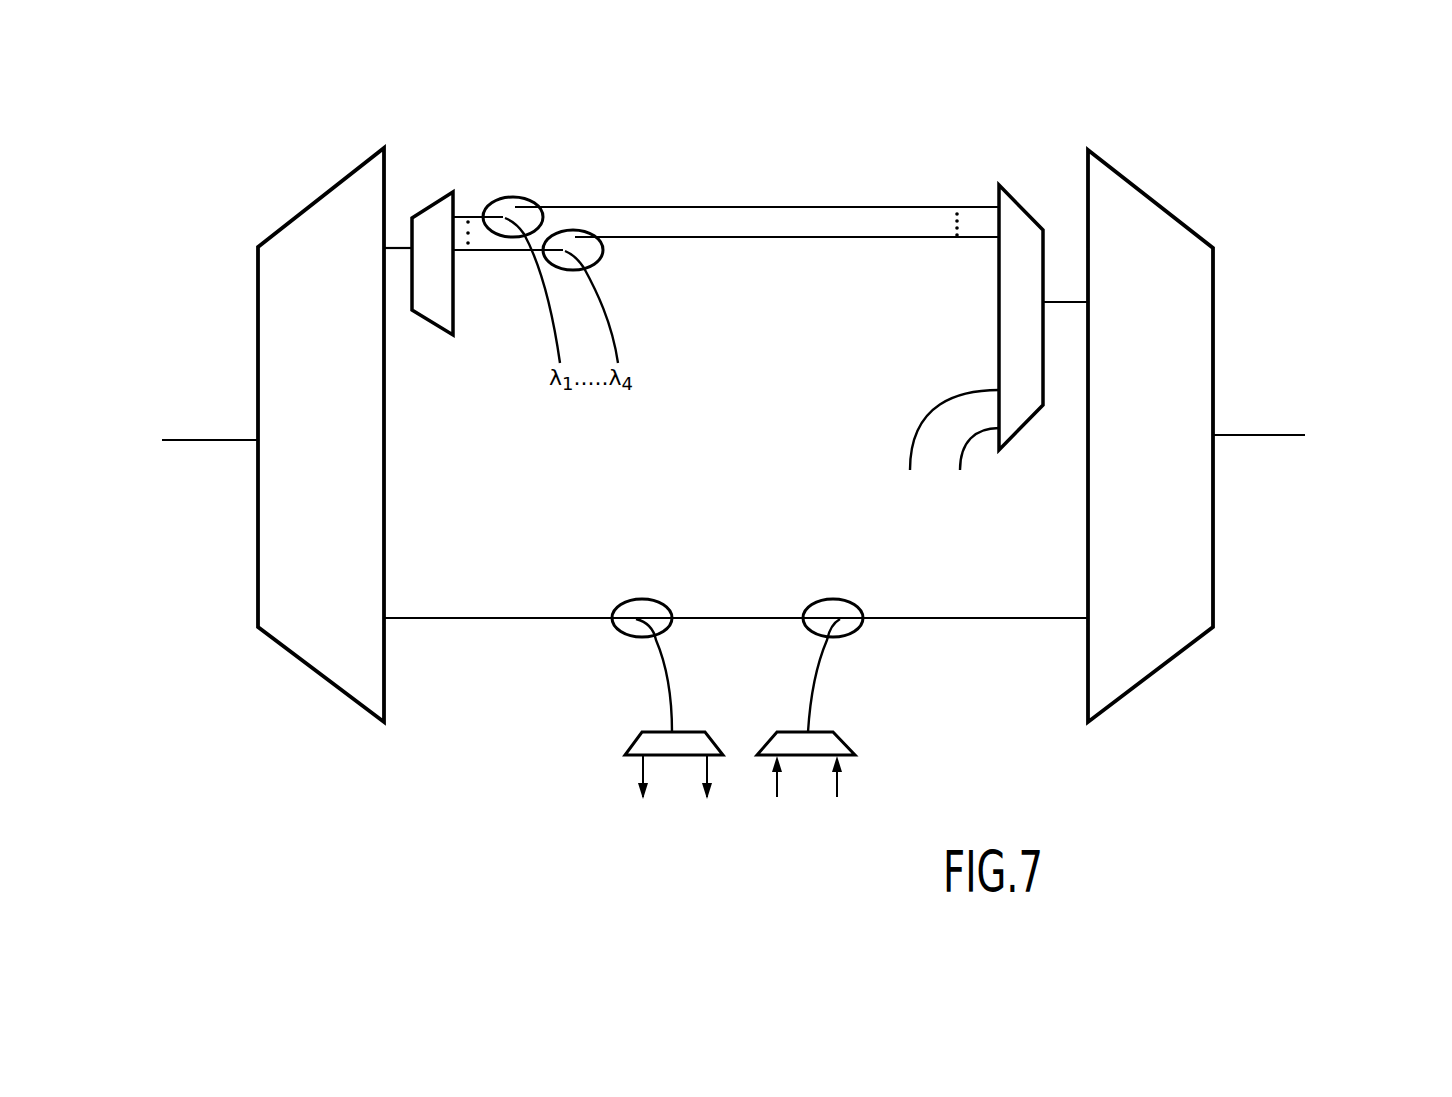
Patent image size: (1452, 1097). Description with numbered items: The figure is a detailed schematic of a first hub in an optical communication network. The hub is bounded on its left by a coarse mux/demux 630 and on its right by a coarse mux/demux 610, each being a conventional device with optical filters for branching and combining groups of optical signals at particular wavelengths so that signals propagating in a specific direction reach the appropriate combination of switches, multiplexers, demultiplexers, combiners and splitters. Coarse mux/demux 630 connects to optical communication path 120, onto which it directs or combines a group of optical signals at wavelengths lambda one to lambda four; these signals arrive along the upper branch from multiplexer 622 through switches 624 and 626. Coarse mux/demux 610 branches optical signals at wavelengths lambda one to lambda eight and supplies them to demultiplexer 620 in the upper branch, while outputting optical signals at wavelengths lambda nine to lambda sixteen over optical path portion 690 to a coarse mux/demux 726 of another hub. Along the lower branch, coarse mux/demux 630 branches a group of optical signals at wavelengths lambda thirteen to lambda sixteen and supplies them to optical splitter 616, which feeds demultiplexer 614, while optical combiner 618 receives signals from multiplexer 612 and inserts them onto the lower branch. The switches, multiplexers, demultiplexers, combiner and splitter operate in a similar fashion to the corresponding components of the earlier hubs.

The optical communication path 120 is at (217, 440).
The coarse mux/demux 630 is at (310, 667).
The coarse mux/demux 610 is at (1147, 682).
The optical path portion 690 is at (1262, 435).
The coarse mux/demux 726 is at (1373, 452).
The multiplexer 622 is at (437, 203).
The switch 624 is at (523, 197).
The switch 626 is at (590, 230).
The demultiplexer 620 is at (1017, 200).
The optical splitter 616 is at (652, 600).
The optical combiner 618 is at (840, 600).
The demultiplexer 614 is at (630, 748).
The multiplexer 612 is at (845, 740).